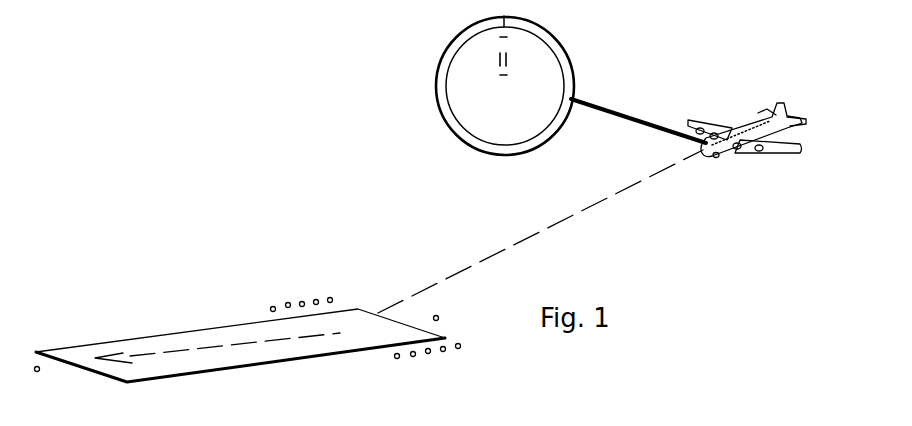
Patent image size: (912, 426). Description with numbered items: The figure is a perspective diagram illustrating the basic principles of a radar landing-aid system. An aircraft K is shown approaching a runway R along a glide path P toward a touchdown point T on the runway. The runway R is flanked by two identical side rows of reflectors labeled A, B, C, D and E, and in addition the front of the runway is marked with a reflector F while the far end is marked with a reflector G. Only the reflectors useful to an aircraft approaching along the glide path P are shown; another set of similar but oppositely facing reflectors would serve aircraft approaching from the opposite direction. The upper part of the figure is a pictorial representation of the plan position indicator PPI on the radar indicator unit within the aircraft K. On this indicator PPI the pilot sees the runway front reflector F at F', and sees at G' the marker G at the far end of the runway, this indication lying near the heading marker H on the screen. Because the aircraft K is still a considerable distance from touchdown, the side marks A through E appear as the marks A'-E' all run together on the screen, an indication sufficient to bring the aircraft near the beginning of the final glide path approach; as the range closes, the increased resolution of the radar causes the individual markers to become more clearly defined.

The P.P.I. indicator PPI is at (470, 150).
The heading marker H is at (500, 19).
The far-end reflector indication G' is at (544, 38).
The side marker indications A'-E' is at (479, 63).
The runway front reflector indication F' is at (516, 90).
The aircraft K is at (732, 129).
The glide path P is at (571, 218).
The front reflector F is at (443, 307).
The runway R is at (187, 344).
The touchdown point T is at (342, 332).
The far-end reflector G is at (45, 377).
The side reflector A is at (394, 324).
The side reflector B is at (379, 326).
The side reflector C is at (365, 328).
The side reflector D is at (351, 330).
The side reflector E is at (334, 332).